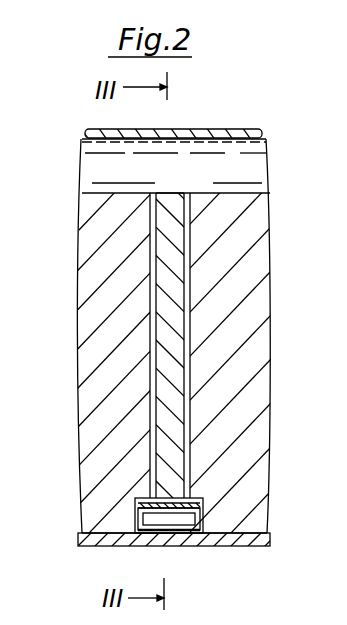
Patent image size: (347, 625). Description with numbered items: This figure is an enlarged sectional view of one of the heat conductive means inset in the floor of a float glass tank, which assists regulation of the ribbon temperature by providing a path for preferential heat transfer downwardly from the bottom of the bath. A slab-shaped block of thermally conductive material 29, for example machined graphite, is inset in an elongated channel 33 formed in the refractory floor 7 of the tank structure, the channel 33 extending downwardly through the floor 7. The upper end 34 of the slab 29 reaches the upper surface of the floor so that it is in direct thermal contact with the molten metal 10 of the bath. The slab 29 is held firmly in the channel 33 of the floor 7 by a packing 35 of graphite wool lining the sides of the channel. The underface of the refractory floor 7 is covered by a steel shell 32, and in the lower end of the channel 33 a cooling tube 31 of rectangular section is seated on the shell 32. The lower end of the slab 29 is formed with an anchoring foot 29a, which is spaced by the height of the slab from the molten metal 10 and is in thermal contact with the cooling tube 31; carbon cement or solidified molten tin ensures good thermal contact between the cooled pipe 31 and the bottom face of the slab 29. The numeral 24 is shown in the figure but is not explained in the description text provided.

The floor 7 is at (93, 389).
The molten metal 10 is at (242, 153).
The cover strip 24 is at (135, 122).
The block of thermally conductive material 29 is at (165, 334).
The anchoring foot 29a is at (136, 499).
The cooling tube 31 is at (186, 531).
The steel shell 32 is at (86, 535).
The elongated channel 33 is at (150, 235).
The upper end 34 is at (173, 193).
The packing 35 is at (150, 290).